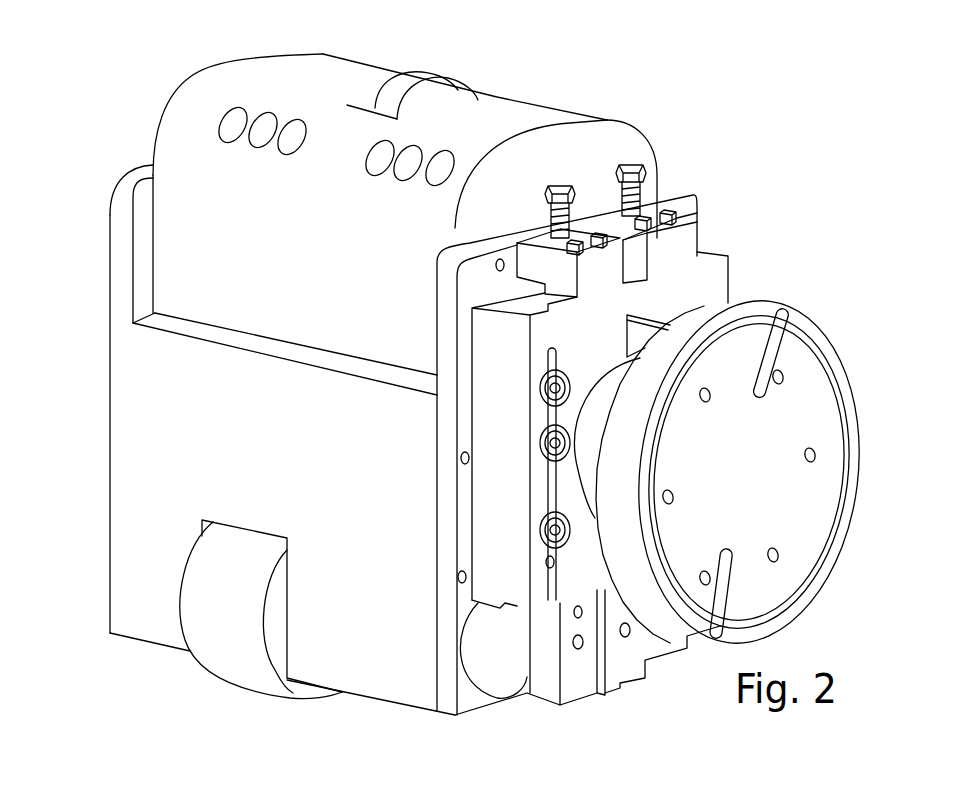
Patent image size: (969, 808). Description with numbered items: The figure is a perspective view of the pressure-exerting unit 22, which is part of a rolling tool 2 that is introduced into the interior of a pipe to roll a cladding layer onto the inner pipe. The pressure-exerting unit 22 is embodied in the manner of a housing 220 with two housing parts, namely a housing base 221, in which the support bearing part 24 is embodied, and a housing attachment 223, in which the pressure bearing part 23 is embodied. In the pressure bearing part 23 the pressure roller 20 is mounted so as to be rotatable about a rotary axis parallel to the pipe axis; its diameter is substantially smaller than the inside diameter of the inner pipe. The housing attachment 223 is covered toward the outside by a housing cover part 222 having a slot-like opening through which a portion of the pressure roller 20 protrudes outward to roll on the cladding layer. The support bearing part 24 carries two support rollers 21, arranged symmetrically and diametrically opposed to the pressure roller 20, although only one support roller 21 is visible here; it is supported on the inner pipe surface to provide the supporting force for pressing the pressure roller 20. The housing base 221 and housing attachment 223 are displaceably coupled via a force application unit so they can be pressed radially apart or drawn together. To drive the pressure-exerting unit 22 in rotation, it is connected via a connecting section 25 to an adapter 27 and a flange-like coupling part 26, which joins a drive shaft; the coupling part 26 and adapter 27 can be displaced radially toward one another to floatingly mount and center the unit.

The rolling tool 2 is at (718, 118).
The pressure roller 20 is at (421, 78).
The support roller 21 is at (220, 662).
The pressure-exerting unit 22 is at (97, 398).
The pressure bearing part 23 is at (175, 140).
The support bearing part 24 is at (155, 470).
The connecting section 25 is at (715, 223).
The coupling part 26 is at (808, 308).
The adapter 27 is at (730, 266).
The housing 220 is at (97, 213).
The housing base 221 is at (110, 458).
The housing cover part 222 is at (270, 76).
The housing attachment 223 is at (175, 100).